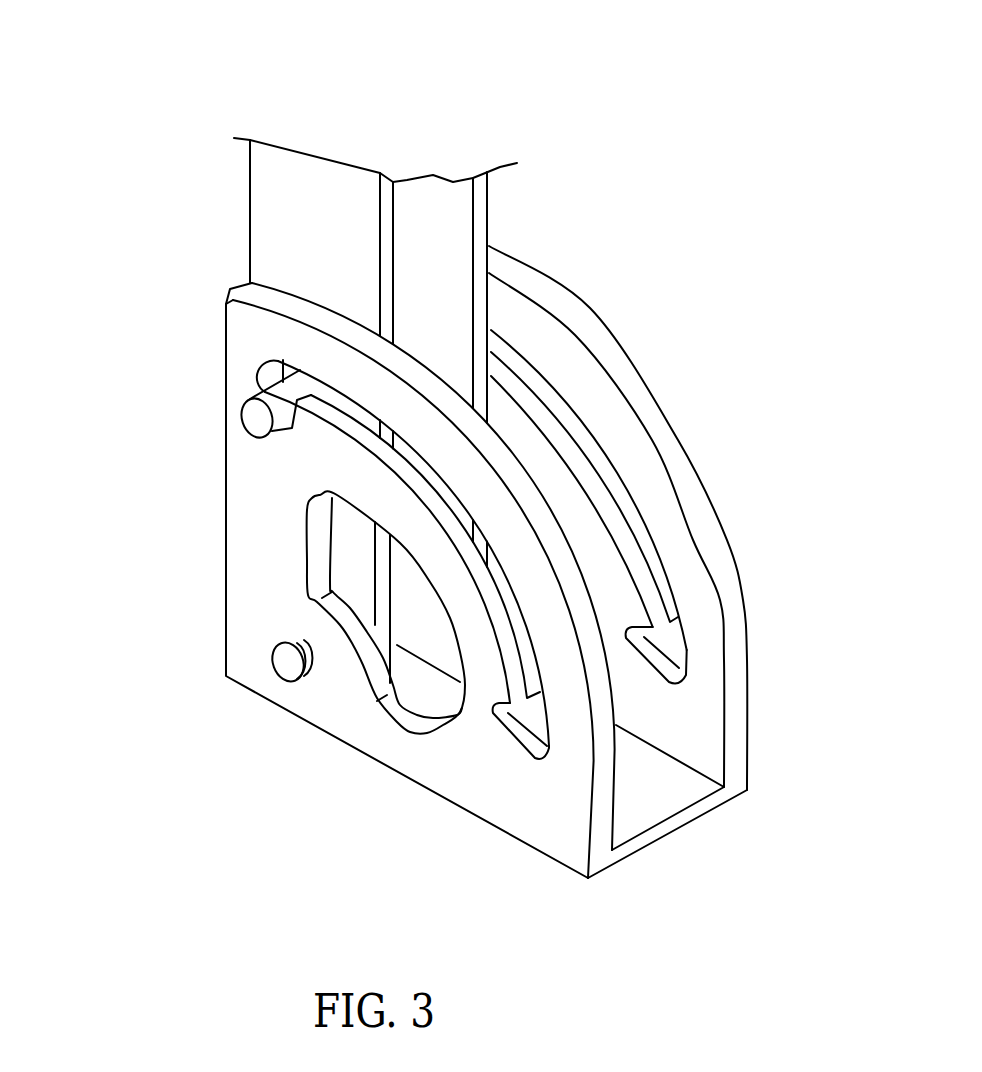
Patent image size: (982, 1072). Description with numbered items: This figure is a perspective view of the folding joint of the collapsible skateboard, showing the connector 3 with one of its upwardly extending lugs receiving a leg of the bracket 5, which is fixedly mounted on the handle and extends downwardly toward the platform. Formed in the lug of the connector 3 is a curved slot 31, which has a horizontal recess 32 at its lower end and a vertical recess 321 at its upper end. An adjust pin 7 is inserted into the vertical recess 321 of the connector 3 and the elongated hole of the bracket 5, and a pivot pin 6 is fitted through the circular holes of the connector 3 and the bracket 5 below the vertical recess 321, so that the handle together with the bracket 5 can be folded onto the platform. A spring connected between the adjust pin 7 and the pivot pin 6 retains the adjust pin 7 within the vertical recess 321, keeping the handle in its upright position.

The connector 3 is at (678, 820).
The curved slot 31 is at (582, 433).
The horizontal recess 32 is at (681, 649).
The vertical recess 321 is at (270, 381).
The bracket 5 is at (303, 162).
The pivot pin 6 is at (283, 668).
The adjust pin 7 is at (253, 420).